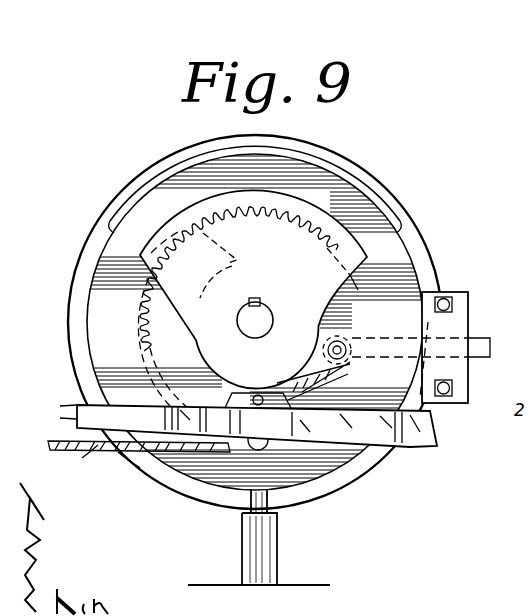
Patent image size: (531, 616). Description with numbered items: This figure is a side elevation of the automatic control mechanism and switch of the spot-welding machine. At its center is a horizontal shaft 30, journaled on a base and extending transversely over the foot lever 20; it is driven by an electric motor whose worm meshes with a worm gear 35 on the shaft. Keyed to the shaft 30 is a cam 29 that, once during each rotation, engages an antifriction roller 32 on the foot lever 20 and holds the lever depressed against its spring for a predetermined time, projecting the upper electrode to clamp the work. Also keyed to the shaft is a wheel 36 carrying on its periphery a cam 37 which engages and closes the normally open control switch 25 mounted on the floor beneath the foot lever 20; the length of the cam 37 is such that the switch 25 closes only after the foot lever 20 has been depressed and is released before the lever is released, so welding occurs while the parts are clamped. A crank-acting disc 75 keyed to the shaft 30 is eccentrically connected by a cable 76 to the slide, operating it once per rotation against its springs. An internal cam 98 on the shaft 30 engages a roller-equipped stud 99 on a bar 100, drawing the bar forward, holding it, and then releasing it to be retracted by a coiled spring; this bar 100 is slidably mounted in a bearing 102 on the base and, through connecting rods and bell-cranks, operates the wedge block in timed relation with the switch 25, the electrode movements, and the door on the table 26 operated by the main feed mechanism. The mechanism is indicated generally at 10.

The housing ring 10 is at (92, 308).
The foot lever 20 is at (75, 418).
The control switch 25 is at (265, 536).
The table 26 is at (528, 381).
The cam 29 is at (252, 298).
The horizontal shaft 30 is at (255, 326).
The antifriction roller 32 is at (357, 378).
The worm gear 35 is at (300, 214).
The wheel 36 is at (358, 278).
The cam 37 is at (372, 192).
The crank-acting disc 75 is at (143, 462).
The cable 76 is at (86, 460).
The internal cam 98 is at (240, 257).
The roller-equipped stud 99 is at (360, 339).
The bar 100 is at (490, 347).
The bearing 102 is at (452, 292).